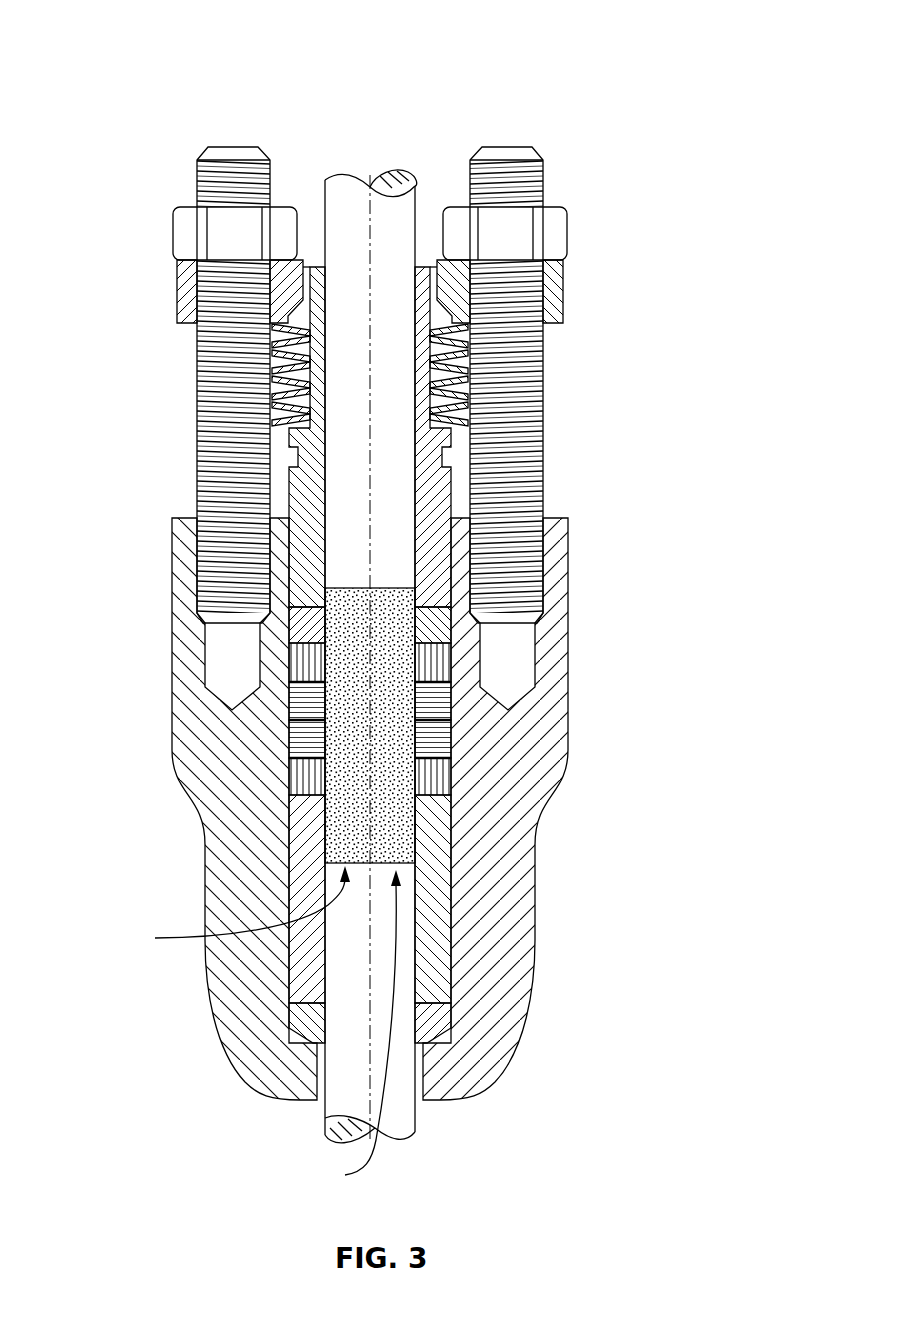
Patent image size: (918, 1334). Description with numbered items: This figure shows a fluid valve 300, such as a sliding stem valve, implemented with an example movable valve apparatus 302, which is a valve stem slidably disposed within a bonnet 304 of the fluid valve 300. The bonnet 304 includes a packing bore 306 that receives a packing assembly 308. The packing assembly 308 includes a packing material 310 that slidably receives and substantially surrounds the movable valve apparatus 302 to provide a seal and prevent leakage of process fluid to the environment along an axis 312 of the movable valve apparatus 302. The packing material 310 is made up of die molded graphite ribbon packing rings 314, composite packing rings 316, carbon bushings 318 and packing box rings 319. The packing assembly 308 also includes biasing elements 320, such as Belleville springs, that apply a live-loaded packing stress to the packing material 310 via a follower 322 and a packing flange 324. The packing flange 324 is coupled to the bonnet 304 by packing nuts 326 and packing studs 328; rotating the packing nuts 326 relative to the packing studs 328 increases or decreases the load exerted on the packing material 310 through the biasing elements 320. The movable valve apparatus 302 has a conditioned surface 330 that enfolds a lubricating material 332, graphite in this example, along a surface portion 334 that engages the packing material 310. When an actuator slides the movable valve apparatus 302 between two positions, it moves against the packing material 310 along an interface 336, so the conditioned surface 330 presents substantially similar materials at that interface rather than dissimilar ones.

The fluid valve 300 is at (138, 38).
The movable valve apparatus 302 is at (325, 196).
The bonnet 304 is at (208, 978).
The packing bore 306 is at (325, 857).
The packing assembly 308 is at (688, 427).
The packing material 310 is at (393, 809).
The axis 312 is at (376, 623).
The die molded graphite ribbon packing rings 314 is at (300, 742).
The composite packing rings 316 is at (302, 663).
The carbon bushings 318 is at (300, 614).
The packing box rings 319 is at (452, 1015).
The biasing elements 320 is at (463, 388).
The follower 322 is at (437, 512).
The packing flange 324 is at (178, 295).
The packing nuts 326 is at (175, 232).
The packing studs 328 is at (197, 440).
The conditioned surface 330 is at (228, 909).
The lubricating material 332 is at (340, 821).
The surface portion 334 is at (320, 805).
The interface 336 is at (349, 1029).